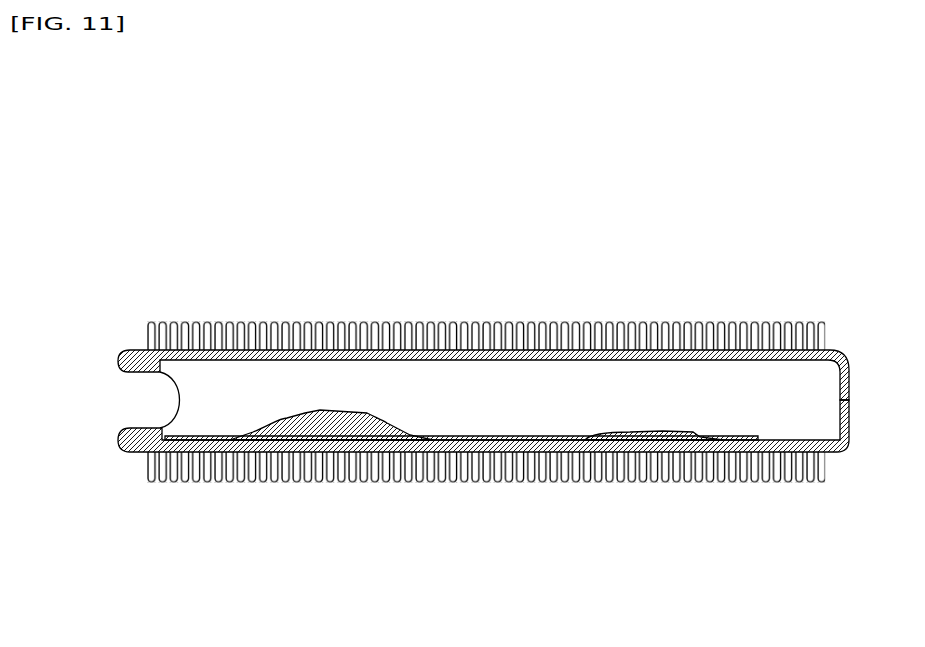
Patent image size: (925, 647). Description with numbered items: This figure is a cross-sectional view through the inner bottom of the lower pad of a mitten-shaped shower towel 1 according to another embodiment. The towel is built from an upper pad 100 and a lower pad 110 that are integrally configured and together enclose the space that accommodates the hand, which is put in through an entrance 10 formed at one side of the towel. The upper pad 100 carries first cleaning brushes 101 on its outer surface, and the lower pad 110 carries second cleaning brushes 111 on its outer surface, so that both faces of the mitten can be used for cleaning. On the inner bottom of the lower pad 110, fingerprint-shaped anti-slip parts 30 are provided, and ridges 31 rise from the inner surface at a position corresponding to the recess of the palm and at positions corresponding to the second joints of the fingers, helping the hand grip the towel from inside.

The shower towel 1 is at (272, 214).
The entrance 10 is at (206, 407).
The upper pad 100 is at (143, 350).
The first cleaning brushes 101 is at (555, 323).
The lower pad 110 is at (135, 452).
The second cleaning brushes 111 is at (563, 483).
The anti-slip parts 30 is at (758, 439).
The ridges 31 is at (365, 433).